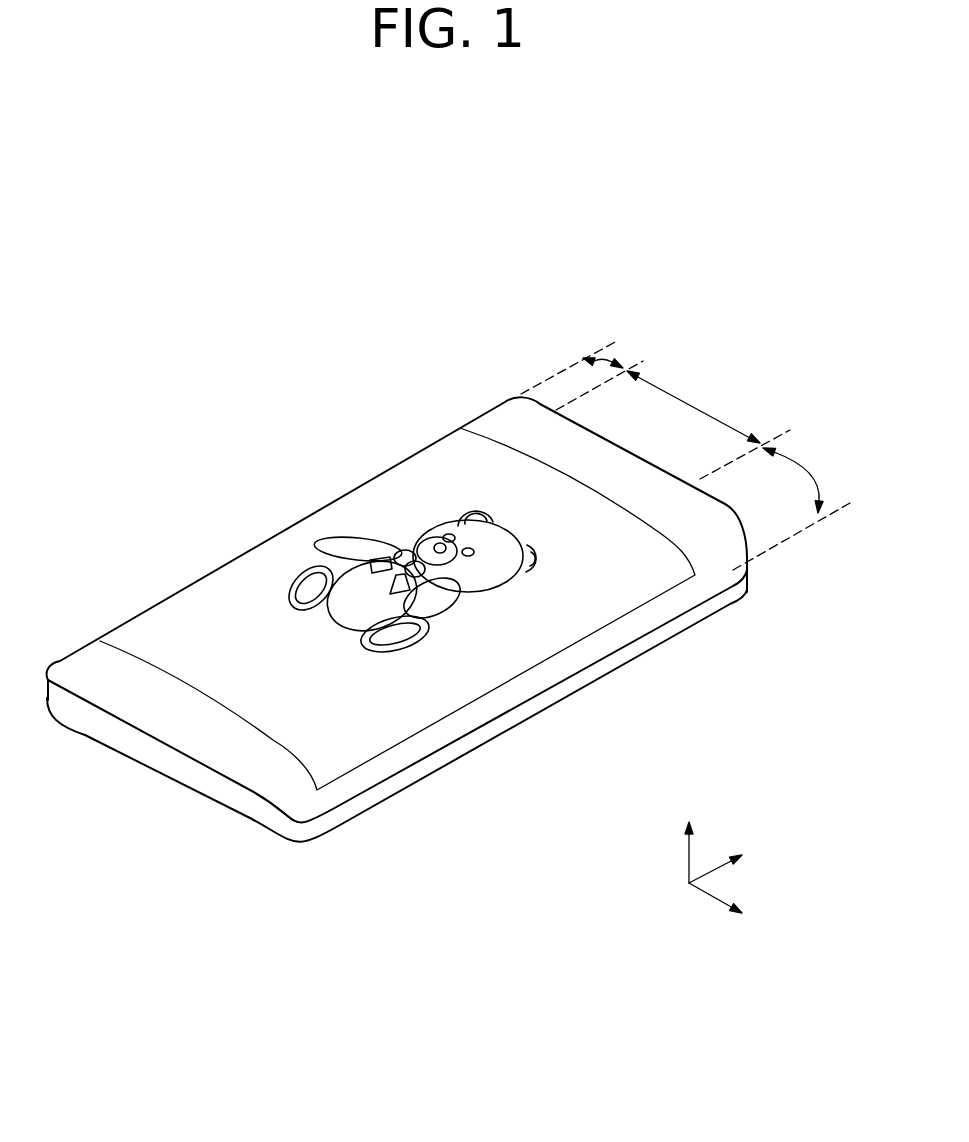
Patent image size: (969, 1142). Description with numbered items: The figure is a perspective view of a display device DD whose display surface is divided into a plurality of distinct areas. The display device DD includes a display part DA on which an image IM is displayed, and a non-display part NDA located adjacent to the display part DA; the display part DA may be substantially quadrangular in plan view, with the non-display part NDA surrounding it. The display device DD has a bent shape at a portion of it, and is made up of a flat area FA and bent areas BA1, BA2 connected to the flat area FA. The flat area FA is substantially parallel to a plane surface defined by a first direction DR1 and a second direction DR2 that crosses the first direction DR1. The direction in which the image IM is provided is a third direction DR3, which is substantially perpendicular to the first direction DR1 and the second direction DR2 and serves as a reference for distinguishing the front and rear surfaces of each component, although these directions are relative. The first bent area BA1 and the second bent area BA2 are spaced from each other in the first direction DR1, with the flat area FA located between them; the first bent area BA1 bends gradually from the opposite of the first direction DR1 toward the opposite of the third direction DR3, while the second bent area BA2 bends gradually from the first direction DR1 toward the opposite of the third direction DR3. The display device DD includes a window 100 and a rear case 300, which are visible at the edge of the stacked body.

The display device DD is at (661, 245).
The window 100 is at (747, 563).
The rear case 300 is at (740, 589).
The display part DA is at (433, 470).
The non-display part NDA is at (524, 420).
The image IM is at (330, 543).
The flat area FA is at (708, 425).
The first bent area BA1 is at (587, 372).
The second bent area BA2 is at (791, 509).
The first direction DR1 is at (738, 913).
The second direction DR2 is at (738, 853).
The third direction DR3 is at (688, 837).